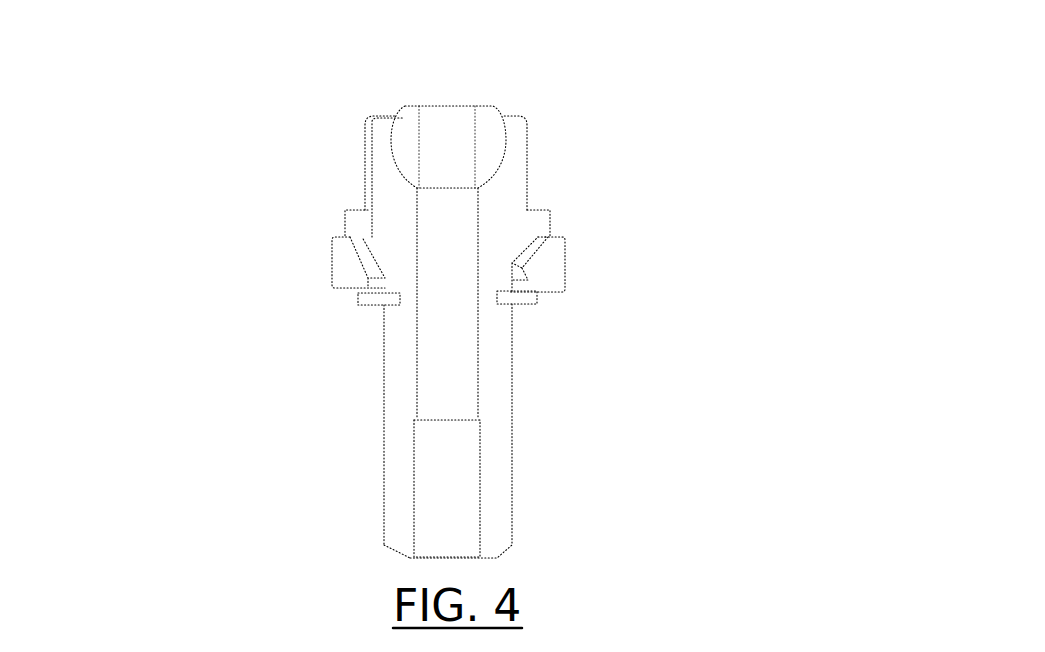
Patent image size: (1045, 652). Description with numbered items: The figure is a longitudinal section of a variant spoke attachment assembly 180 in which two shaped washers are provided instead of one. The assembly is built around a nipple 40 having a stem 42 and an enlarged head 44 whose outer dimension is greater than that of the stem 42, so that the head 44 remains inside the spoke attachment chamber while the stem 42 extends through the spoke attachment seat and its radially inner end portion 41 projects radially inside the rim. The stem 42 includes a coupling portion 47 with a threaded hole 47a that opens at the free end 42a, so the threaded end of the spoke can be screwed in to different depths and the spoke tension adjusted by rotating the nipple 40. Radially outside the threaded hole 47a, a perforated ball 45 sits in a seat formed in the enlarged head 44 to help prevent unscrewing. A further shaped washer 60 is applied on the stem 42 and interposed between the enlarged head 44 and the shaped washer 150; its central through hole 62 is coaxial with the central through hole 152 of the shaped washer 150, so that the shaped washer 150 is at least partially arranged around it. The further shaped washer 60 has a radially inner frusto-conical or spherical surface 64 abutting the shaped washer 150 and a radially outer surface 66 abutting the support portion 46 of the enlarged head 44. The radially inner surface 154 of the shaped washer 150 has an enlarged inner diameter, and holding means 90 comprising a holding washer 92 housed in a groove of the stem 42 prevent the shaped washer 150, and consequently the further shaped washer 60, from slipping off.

The spoke attachment assembly 180 is at (727, 68).
The nipple 40 is at (337, 107).
The perforated ball 45 is at (490, 128).
The enlarged head 44 is at (542, 172).
The coupling portion 47 is at (482, 383).
The threaded hole 47a is at (417, 362).
The central through hole 62 is at (362, 242).
The radially outer frusto-conical or spherical surface 66 is at (532, 257).
The support portion 46 is at (357, 232).
The further shaped washer 60 is at (531, 257).
The central through hole 152 is at (360, 273).
The shaped washer 150 is at (563, 268).
The radially inner surface 154 is at (548, 292).
The radially inner frusto-conical or spherical surface 64 is at (530, 265).
The holding means 90 is at (359, 305).
The holding washer 92 is at (520, 298).
The radially inner end portion 41 is at (382, 448).
The stem 42 is at (524, 495).
The free end 42a is at (400, 561).